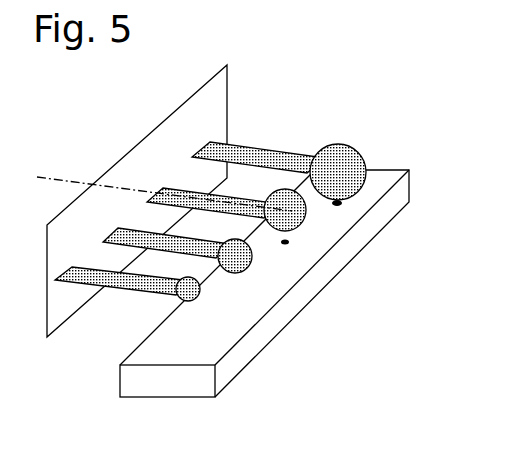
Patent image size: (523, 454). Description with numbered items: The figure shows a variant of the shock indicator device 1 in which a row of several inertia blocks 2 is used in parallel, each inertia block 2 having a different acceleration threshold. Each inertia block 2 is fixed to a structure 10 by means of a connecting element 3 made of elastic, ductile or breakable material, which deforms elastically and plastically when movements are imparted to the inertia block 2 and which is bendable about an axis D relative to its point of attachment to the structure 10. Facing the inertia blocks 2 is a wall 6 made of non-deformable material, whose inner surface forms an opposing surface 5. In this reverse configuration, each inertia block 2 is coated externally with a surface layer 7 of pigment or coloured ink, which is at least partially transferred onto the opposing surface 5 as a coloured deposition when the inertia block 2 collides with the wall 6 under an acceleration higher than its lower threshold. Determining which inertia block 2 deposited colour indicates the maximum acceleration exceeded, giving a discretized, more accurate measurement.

The shock indicator device 1 is at (225, 223).
The inertia block 2 is at (330, 157).
The connecting element 3 is at (258, 155).
The opposing surface 5 is at (264, 283).
The wall 6 is at (306, 291).
The surface layer 7 is at (357, 163).
The structure 10 is at (163, 142).
The axis D is at (41, 169).